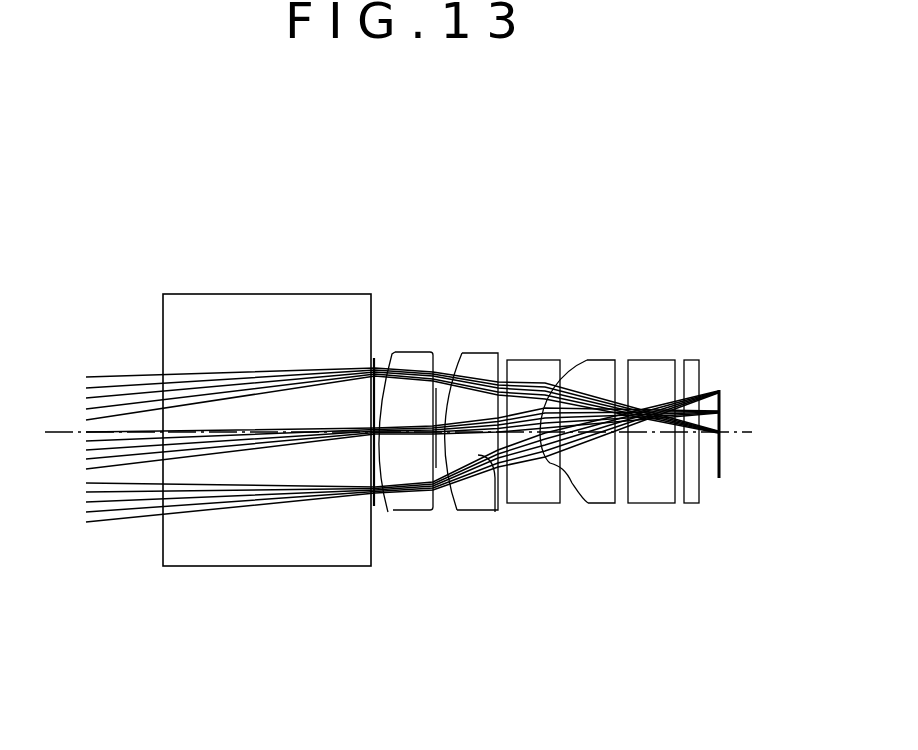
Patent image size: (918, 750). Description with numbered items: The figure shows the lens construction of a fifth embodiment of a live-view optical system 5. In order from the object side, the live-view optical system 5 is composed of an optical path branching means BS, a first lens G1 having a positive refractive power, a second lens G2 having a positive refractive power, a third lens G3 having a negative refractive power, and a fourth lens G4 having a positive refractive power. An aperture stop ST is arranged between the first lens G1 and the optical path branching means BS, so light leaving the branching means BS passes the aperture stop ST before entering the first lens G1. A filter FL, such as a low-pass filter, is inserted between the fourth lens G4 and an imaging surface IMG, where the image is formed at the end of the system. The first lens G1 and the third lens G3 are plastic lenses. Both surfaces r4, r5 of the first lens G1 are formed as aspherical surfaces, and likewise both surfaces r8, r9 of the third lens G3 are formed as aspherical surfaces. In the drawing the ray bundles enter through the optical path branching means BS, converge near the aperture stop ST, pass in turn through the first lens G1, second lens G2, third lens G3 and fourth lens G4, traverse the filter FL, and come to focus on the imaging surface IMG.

The optical path branching means BS is at (233, 317).
The aperture stop ST is at (380, 367).
The live-view optical system 5 is at (616, 233).
The first lens G1 is at (420, 432).
The second lens G2 is at (483, 432).
The third lens G3 is at (537, 373).
The fourth lens G4 is at (592, 432).
The filter FL is at (693, 373).
The object-side surface of first lens r4 is at (384, 512).
The image-side surface of first lens r5 is at (458, 505).
The object-side surface of third lens r8 is at (490, 505).
The image-side surface of third lens r9 is at (569, 497).
The imaging surface IMG is at (717, 463).